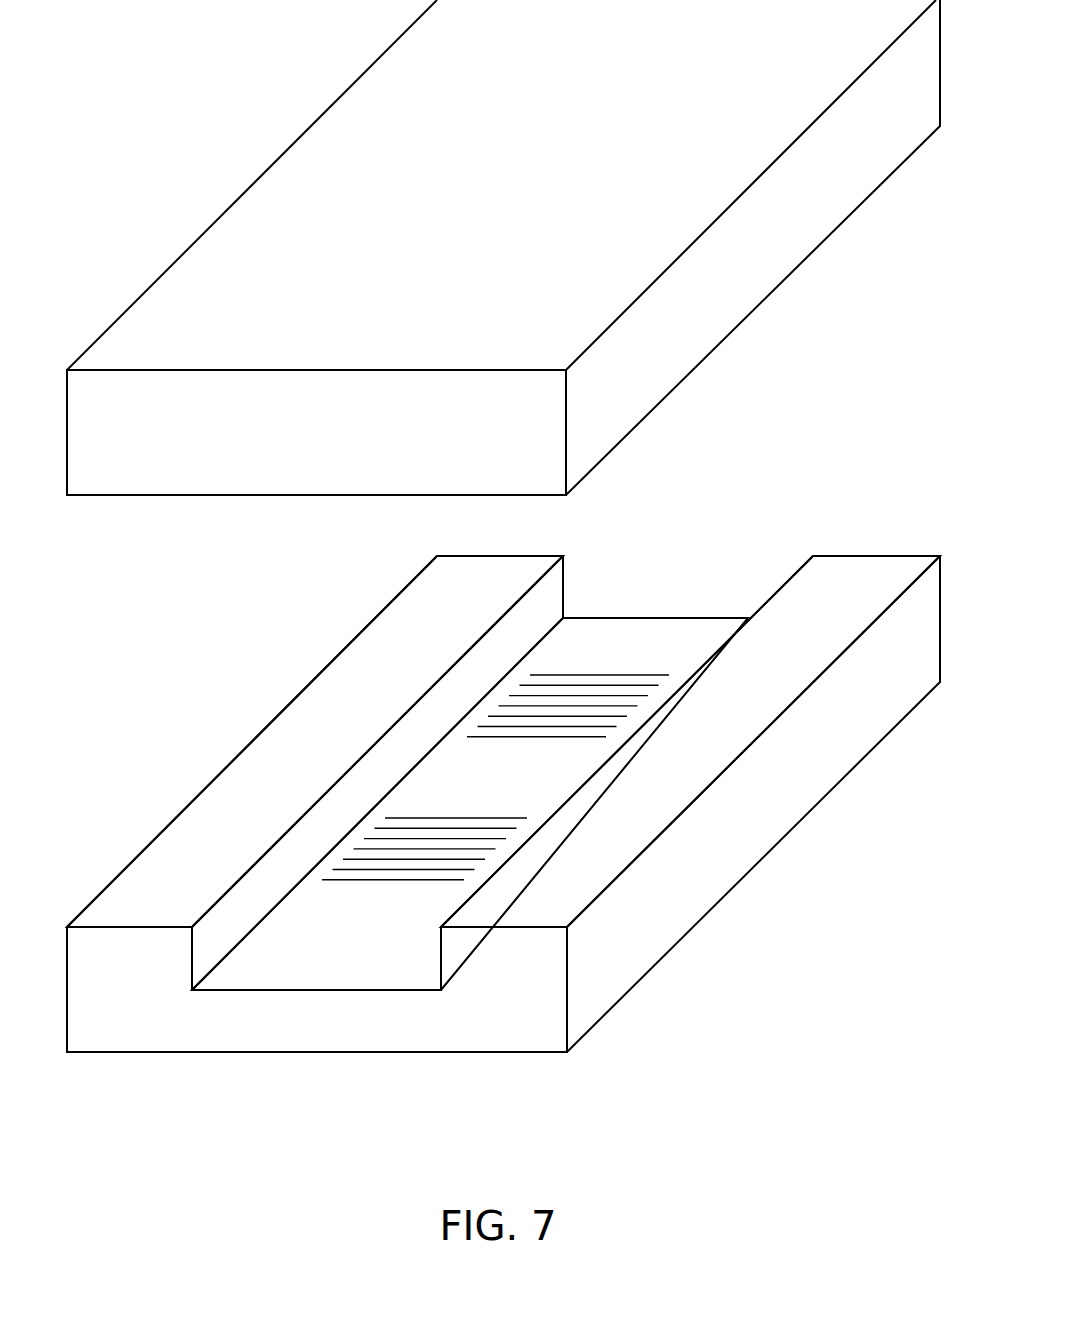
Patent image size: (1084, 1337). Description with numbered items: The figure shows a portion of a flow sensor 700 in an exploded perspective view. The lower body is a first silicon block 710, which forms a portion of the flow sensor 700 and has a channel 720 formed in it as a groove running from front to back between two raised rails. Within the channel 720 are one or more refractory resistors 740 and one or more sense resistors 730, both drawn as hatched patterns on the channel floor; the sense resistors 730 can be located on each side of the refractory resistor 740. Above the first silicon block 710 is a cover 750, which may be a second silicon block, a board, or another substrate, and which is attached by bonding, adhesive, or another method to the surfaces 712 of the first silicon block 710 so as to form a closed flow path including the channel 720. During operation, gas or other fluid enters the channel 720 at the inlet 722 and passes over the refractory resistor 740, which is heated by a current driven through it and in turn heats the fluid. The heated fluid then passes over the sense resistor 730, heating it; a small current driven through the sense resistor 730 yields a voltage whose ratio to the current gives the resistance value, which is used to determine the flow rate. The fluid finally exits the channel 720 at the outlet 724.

The flow sensor 700 is at (130, 146).
The first silicon block 710 is at (650, 915).
The surfaces 712 is at (268, 765).
The channel 720 is at (388, 955).
The inlet 722 is at (250, 972).
The outlet 724 is at (712, 553).
The sense resistor 730 is at (606, 674).
The refractory resistor 740 is at (390, 870).
The cover 750 is at (848, 182).